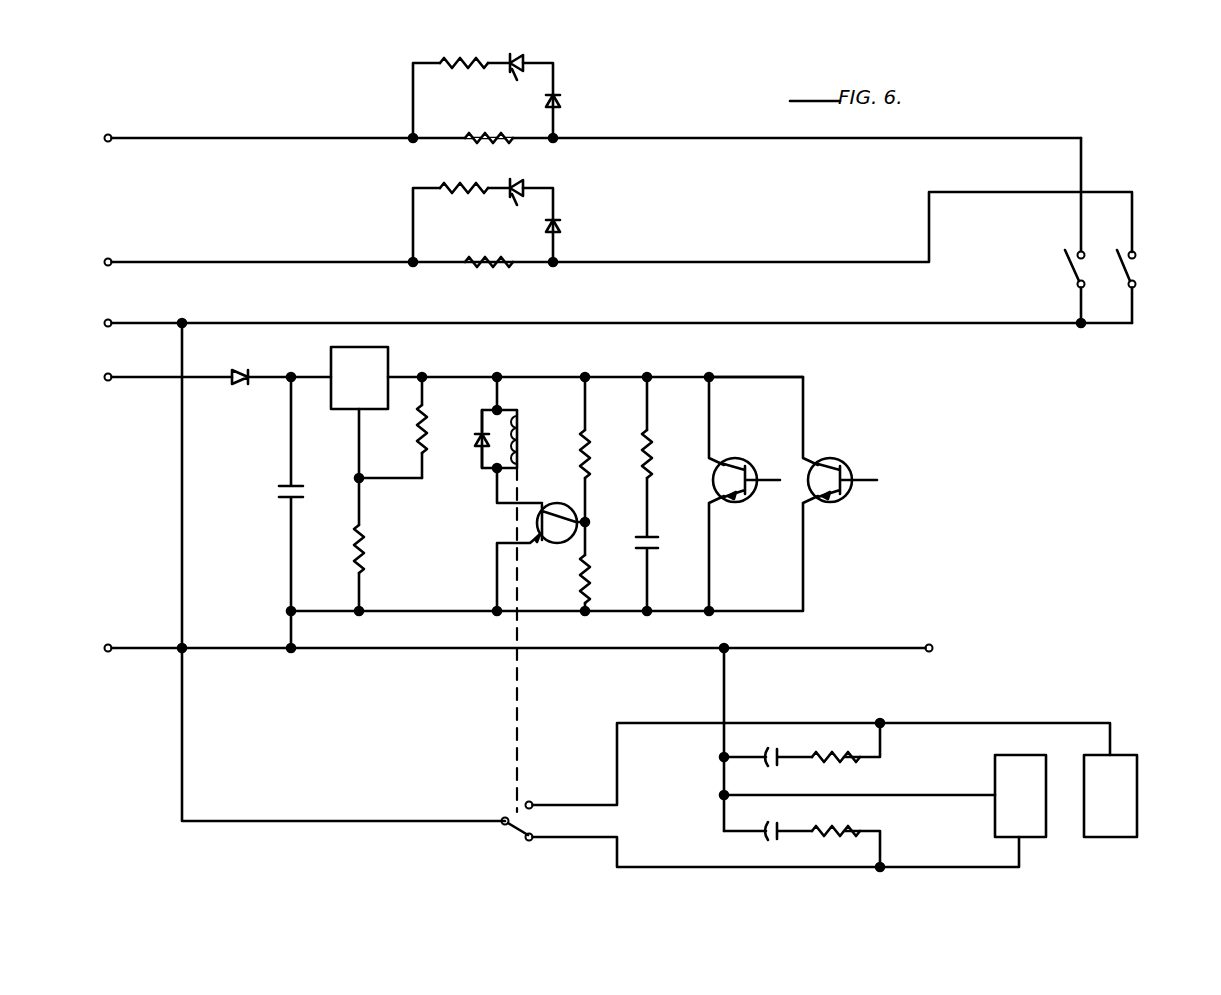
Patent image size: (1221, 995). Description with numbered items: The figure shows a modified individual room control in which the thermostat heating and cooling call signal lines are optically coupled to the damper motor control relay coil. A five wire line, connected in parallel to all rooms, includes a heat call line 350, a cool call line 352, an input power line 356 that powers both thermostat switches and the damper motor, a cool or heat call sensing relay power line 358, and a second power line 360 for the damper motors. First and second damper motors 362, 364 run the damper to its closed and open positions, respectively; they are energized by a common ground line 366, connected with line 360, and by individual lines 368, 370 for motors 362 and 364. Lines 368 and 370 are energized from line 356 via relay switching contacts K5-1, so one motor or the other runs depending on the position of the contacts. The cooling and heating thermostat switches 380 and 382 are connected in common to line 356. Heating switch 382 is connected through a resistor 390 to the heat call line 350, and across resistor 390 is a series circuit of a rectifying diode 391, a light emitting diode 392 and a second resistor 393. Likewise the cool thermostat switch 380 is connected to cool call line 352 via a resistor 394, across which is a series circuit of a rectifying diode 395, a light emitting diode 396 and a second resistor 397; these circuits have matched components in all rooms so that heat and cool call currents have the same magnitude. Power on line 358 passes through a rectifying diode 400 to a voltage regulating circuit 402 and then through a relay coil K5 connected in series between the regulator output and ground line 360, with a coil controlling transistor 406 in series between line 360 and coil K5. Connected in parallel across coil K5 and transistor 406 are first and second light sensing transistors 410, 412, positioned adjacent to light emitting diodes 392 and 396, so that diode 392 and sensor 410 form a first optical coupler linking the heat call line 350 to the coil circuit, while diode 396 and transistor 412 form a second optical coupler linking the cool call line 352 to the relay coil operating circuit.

The heat call line 350 is at (192, 138).
The cool call line 352 is at (195, 262).
The input power line 356 is at (222, 323).
The cool or heat call sensing relay power line 358 is at (148, 377).
The second power line 360 is at (128, 650).
The first damper motor 362 is at (992, 770).
The second damper motor 364 is at (1137, 774).
The common ground line 366 is at (780, 795).
The individual line for first damper motor 368 is at (683, 867).
The individual line for second damper motor 370 is at (768, 723).
The cooling thermostat switch 380 is at (1136, 274).
The heating thermostat switch 382 is at (1065, 269).
The resistor 390 is at (480, 114).
The rectifying diode 391 is at (560, 100).
The light emitting diode 392 is at (518, 52).
The second resistor 393 is at (440, 55).
The resistor 394 is at (480, 240).
The rectifying diode 395 is at (560, 225).
The light emitting diode 396 is at (518, 177).
The second resistor 397 is at (445, 180).
The rectifying diode 400 is at (236, 368).
The voltage regulating circuit 402 is at (391, 352).
The coil controlling transistor 406 is at (553, 548).
The first light sensing transistor 410 is at (732, 452).
The second light sensing transistor 412 is at (826, 452).
The relay coil K5 is at (524, 428).
The relay switching contacts K5-1 is at (510, 833).